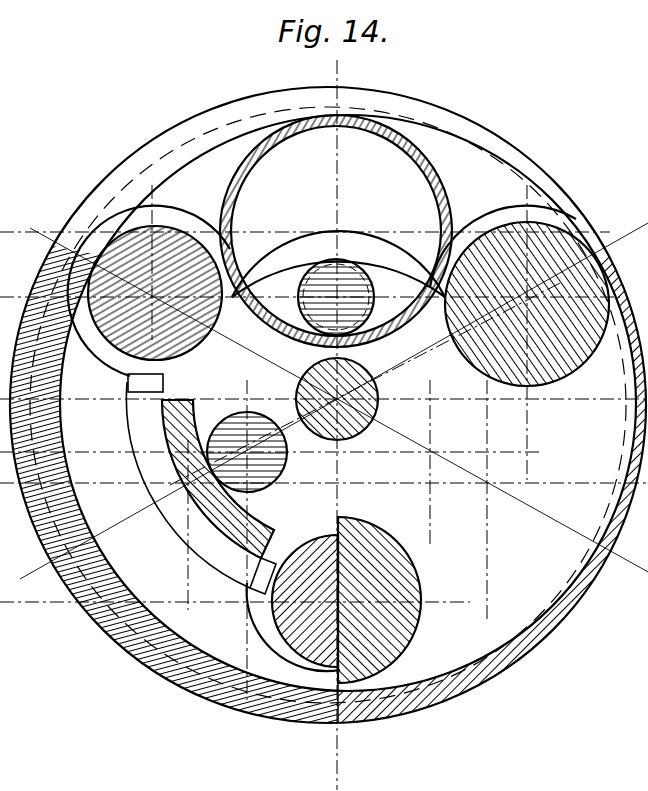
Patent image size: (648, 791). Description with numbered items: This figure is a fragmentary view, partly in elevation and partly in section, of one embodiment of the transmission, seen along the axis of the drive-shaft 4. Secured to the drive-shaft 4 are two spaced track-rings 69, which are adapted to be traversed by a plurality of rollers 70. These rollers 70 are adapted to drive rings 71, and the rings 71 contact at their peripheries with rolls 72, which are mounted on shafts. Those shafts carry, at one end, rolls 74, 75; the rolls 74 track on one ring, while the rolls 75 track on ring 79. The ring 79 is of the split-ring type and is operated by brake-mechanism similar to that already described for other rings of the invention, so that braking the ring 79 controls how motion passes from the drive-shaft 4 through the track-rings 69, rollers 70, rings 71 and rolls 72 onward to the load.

The drive-shaft 4 is at (380, 395).
The track-ring 69 is at (302, 247).
The roller 70 is at (350, 280).
The ring 71 is at (410, 155).
The roll 72 is at (120, 222).
The roll 74 is at (97, 280).
The roll 75 is at (53, 290).
The ring 79 is at (418, 703).